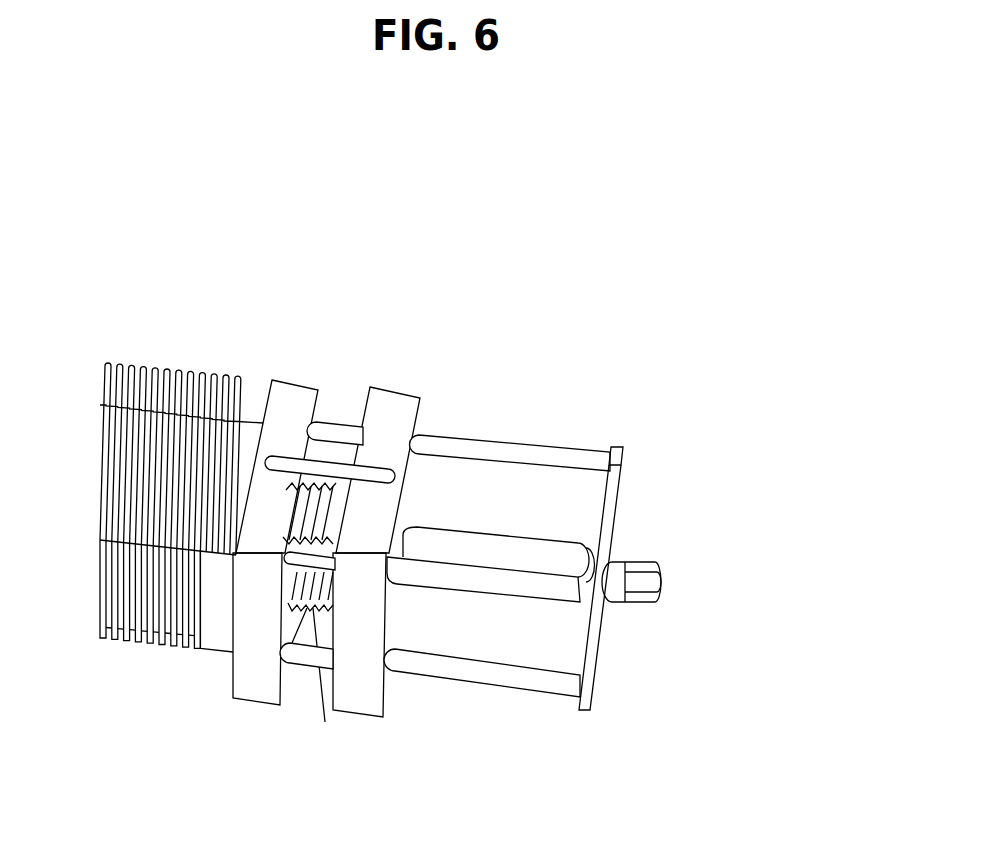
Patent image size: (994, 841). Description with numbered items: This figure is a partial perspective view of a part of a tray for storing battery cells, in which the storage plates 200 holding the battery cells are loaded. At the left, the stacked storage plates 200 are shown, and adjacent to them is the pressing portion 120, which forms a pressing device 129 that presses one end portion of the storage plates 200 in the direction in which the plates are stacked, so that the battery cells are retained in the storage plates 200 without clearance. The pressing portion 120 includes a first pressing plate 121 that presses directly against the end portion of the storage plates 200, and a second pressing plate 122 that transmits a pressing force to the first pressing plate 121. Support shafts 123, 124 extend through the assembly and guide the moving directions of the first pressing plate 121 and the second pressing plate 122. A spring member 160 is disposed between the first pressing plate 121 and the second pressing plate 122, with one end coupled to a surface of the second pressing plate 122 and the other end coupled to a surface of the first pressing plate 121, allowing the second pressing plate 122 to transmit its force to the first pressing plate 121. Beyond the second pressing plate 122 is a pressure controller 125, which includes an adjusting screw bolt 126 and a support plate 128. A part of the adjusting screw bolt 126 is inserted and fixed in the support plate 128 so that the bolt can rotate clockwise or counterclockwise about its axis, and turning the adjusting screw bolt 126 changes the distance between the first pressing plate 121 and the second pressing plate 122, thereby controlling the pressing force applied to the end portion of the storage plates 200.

The storage plate 200 is at (110, 626).
The pressing portion 120 is at (317, 416).
The first pressing plate 121 is at (305, 388).
The second pressing plate 122 is at (398, 390).
The support shaft 123 is at (475, 583).
The support shaft 124 is at (587, 545).
The pressure controller 125 is at (533, 547).
The adjusting screw bolt 126 is at (661, 583).
The support plate 128 is at (593, 643).
The pressing device 129 is at (630, 430).
The spring member 160 is at (325, 722).